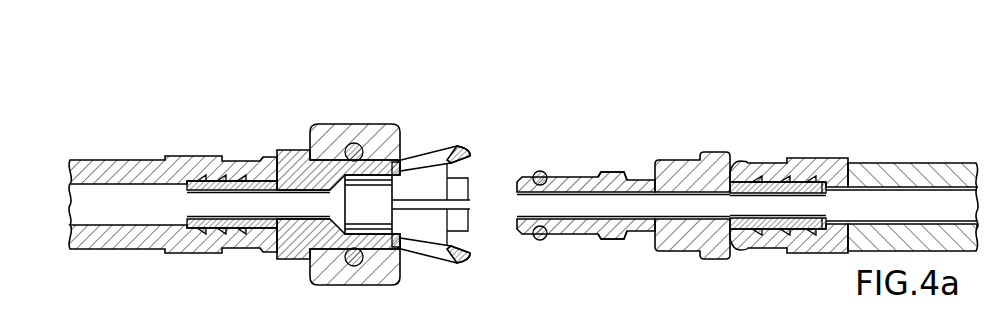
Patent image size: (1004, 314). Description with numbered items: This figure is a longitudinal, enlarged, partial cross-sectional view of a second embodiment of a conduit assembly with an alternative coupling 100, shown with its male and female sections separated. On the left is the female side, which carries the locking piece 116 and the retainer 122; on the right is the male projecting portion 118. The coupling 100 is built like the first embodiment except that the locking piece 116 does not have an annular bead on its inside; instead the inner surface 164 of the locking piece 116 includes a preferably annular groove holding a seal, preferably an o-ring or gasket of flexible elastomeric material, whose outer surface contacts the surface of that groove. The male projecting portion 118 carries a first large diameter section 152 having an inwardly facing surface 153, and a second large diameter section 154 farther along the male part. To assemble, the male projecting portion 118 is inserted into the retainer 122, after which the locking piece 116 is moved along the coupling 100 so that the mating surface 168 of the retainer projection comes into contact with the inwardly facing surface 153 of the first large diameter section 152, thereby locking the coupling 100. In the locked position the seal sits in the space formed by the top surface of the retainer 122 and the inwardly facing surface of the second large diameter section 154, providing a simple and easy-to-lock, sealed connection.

The coupling 100 is at (819, 86).
The locking piece 116 is at (357, 124).
The inner surface 164 is at (383, 152).
The retainer 122 is at (404, 153).
The mating surface 168 is at (450, 152).
The male projecting portion 118 is at (587, 176).
The inwardly facing surface 153 is at (622, 172).
The first large diameter section 152 is at (615, 238).
The second large diameter section 154 is at (675, 161).